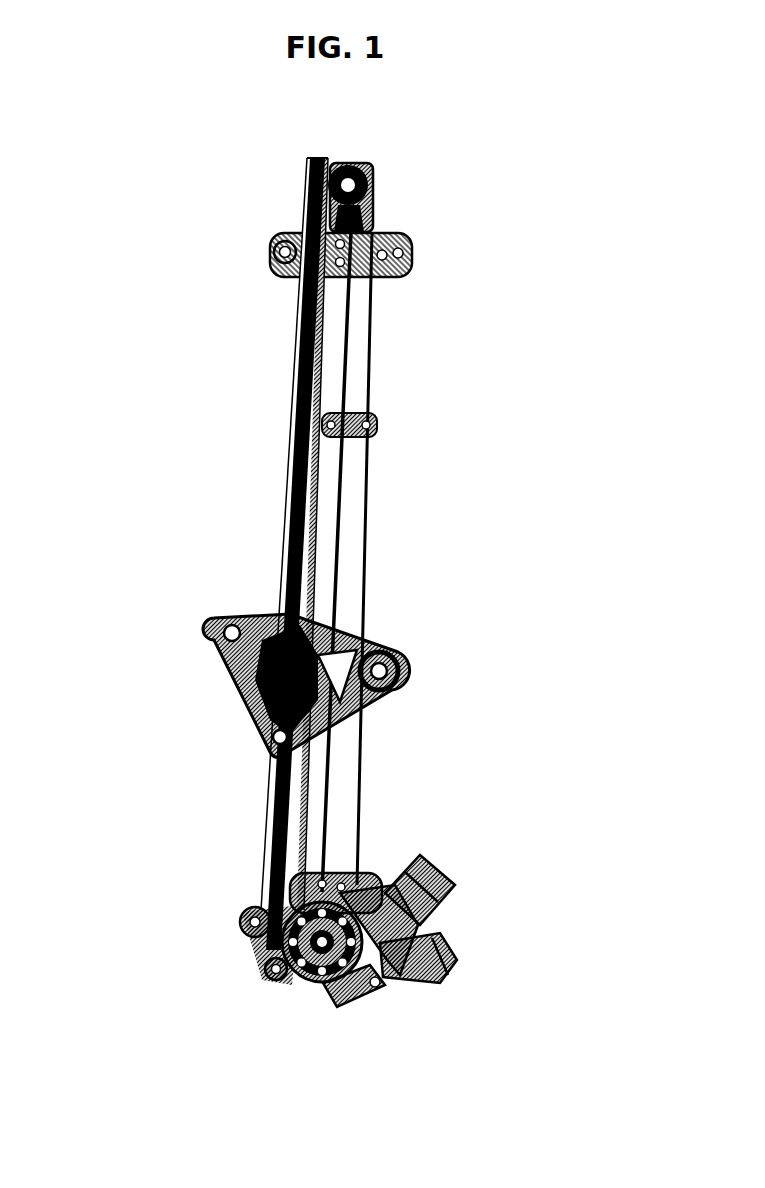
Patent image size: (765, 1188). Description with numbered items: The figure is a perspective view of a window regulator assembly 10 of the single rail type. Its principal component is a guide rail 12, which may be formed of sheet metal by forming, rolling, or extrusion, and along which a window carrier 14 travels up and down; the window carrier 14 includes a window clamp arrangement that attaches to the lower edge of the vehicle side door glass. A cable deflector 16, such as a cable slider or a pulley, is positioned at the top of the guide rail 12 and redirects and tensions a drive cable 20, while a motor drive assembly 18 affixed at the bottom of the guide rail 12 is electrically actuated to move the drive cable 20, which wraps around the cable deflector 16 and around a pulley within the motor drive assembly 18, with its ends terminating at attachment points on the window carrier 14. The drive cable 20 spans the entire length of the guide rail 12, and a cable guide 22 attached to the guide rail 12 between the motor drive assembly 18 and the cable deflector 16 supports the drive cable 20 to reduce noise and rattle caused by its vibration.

The window regulator assembly 10 is at (155, 303).
The guide rail 12 is at (325, 489).
The window carrier 14 is at (240, 666).
The cable deflector 16 is at (373, 182).
The motor drive assembly 18 is at (293, 933).
The drive cable 20 is at (362, 563).
The cable guide 22 is at (367, 415).